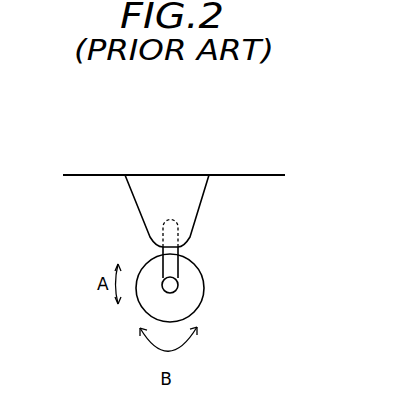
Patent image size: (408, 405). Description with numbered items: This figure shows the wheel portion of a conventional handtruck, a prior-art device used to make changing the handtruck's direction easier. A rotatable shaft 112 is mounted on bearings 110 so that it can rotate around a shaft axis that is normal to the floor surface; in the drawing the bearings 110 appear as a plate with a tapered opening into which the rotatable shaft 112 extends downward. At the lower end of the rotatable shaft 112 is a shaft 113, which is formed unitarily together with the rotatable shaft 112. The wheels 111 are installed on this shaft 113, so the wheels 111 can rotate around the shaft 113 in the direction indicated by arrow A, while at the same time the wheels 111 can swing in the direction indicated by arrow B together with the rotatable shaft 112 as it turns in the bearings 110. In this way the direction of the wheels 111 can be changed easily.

The bearings 110 is at (185, 185).
The wheels 111 is at (190, 300).
The rotatable shaft 112 is at (171, 261).
The shaft 113 is at (178, 285).